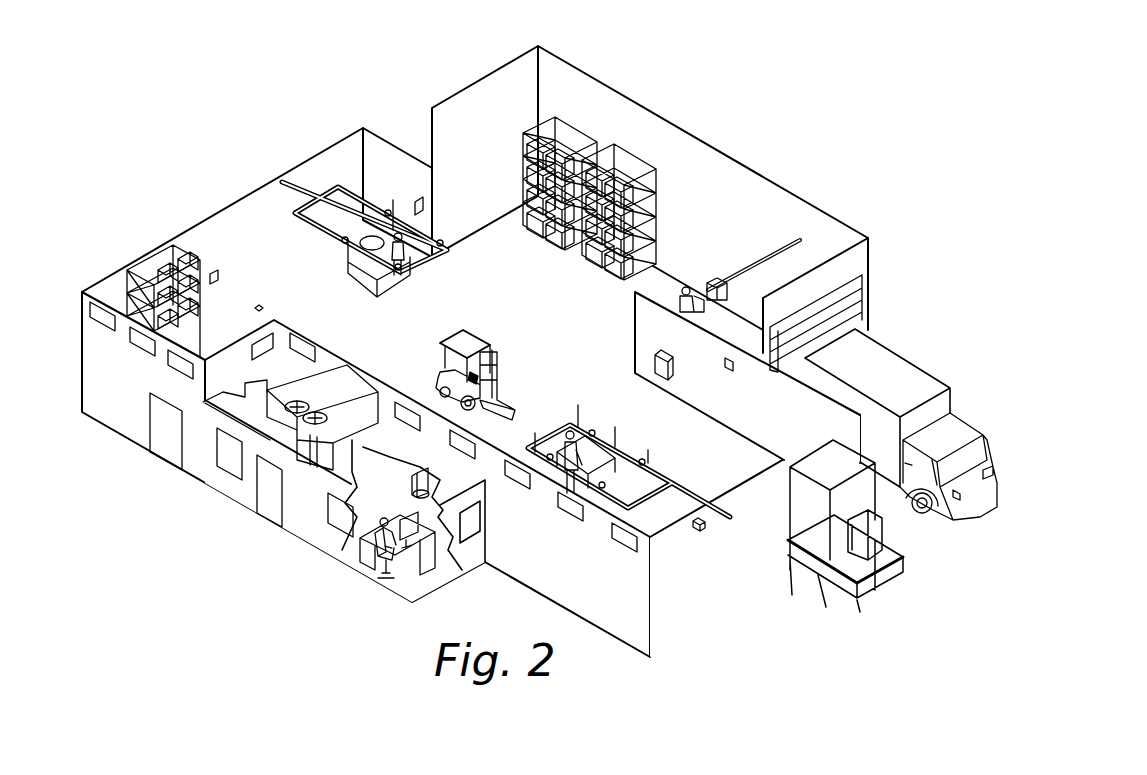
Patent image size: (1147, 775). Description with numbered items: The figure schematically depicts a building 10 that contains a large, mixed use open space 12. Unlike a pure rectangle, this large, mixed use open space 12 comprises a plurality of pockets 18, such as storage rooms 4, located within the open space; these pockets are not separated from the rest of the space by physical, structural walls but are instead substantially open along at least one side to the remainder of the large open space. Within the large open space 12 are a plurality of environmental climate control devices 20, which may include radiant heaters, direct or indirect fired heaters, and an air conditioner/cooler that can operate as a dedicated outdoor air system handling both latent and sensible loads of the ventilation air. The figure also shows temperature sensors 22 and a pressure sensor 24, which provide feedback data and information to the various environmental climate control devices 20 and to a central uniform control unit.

The building 10 is at (475, 351).
The large, mixed use open space 12 is at (600, 316).
The pockets 18 is at (128, 292).
The environmental climate control devices 20 is at (277, 203).
The temperature sensors 22 is at (213, 270).
The pressure sensor 24 is at (424, 206).
The storage rooms 4 is at (264, 308).